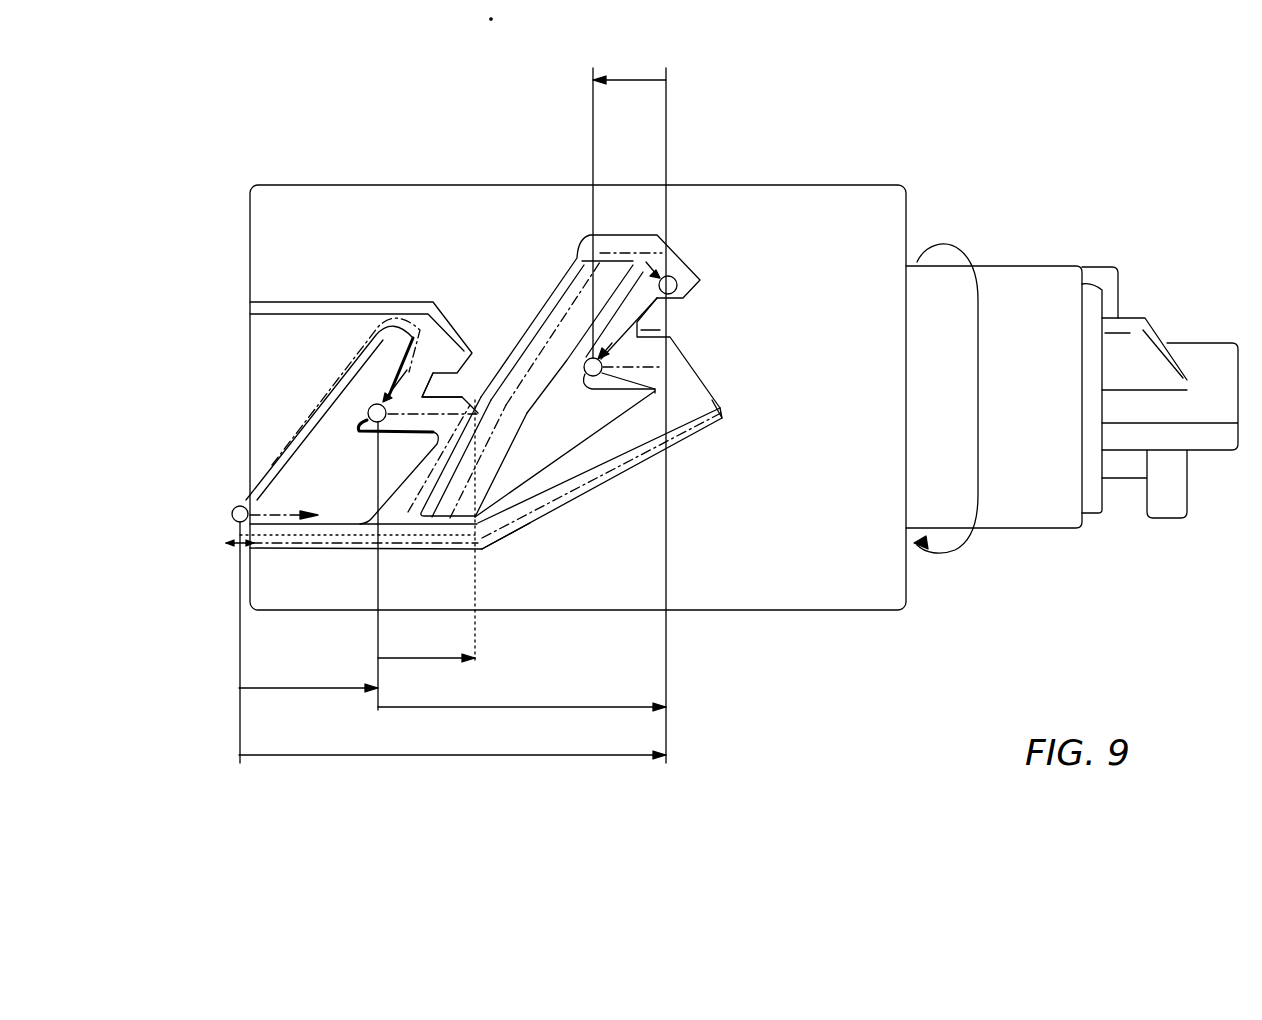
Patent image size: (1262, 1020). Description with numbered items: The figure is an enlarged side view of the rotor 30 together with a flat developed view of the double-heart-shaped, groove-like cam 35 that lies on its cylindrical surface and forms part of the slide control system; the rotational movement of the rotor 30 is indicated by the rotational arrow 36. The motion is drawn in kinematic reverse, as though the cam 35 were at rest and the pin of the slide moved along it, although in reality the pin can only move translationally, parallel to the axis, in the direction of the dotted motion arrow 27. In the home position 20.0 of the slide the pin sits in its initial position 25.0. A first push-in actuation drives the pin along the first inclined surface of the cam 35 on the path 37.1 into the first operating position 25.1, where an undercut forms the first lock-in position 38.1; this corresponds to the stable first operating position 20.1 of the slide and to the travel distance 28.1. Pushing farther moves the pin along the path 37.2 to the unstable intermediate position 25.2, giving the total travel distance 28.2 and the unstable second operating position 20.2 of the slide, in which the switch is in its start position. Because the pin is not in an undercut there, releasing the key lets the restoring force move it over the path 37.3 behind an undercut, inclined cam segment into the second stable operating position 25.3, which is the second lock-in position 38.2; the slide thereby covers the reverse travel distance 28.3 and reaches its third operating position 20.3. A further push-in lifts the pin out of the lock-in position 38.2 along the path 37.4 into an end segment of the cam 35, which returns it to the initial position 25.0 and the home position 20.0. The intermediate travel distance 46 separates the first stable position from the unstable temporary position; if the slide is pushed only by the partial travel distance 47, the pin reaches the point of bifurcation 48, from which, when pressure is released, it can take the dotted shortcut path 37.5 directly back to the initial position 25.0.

The home position 20.0 is at (239, 722).
The first operating position 20.1 is at (378, 641).
The second operating position 20.2 is at (668, 108).
The third operating position 20.3 is at (593, 108).
The initial position 25.0 is at (232, 508).
The first operating position of pin 25.1 is at (371, 410).
The intermediate position 25.2 is at (686, 274).
The second stable operating position 25.3 is at (705, 425).
The motion arrow 27 is at (290, 520).
The travel distance 28.1 is at (302, 688).
The total travel distance 28.2 is at (438, 755).
The reverse travel distance 28.3 is at (628, 80).
The rotor 30 is at (768, 622).
The cam 35 is at (516, 545).
The rotational arrow 36 is at (950, 548).
The first path 37.1 is at (292, 442).
The second path 37.2 is at (522, 345).
The third path 37.3 is at (634, 320).
The fourth path 37.4 is at (574, 474).
The shortcut path 37.5 is at (443, 460).
The first lock-in position 38.1 is at (345, 433).
The second lock-in position 38.2 is at (587, 377).
The intermediate travel distance 46 is at (556, 707).
The partial travel distance 47 is at (432, 658).
The point of bifurcation 48 is at (444, 389).